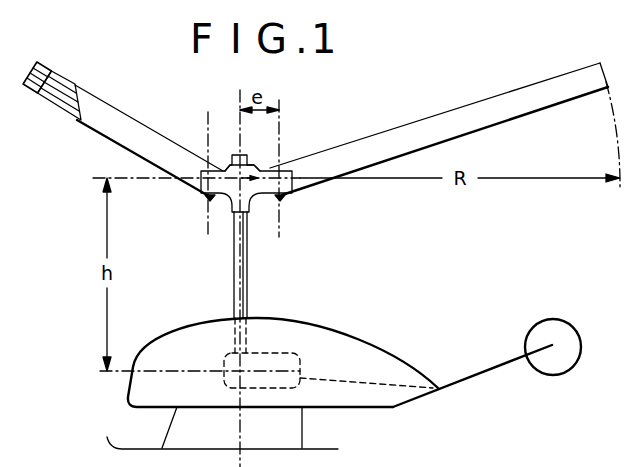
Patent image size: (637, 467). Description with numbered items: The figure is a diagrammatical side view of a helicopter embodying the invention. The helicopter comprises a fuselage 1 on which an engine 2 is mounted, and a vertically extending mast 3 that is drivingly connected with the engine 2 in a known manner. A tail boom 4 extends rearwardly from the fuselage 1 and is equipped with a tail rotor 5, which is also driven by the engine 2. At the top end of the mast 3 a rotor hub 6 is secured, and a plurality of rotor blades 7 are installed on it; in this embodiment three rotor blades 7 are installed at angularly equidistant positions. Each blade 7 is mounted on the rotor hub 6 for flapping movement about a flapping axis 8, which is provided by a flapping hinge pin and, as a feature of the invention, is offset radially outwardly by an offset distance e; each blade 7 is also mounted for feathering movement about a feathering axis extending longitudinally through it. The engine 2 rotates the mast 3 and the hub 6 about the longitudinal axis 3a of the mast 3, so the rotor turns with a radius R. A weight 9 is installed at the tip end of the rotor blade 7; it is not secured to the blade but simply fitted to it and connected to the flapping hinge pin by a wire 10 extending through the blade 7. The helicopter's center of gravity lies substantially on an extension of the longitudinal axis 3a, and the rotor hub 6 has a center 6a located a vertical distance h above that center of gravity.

The fuselage 1 is at (322, 328).
The engine 2 is at (303, 360).
The mast 3 is at (248, 293).
The longitudinal axis 3a is at (243, 270).
The tail boom 4 is at (483, 377).
The tail rotor 5 is at (551, 319).
The rotor hub 6 is at (256, 166).
The center of rotor hub 6a is at (229, 175).
The rotor blades 7 is at (147, 128).
The flapping axis 8 is at (281, 197).
The weight 9 is at (46, 72).
The wire 10 is at (73, 86).